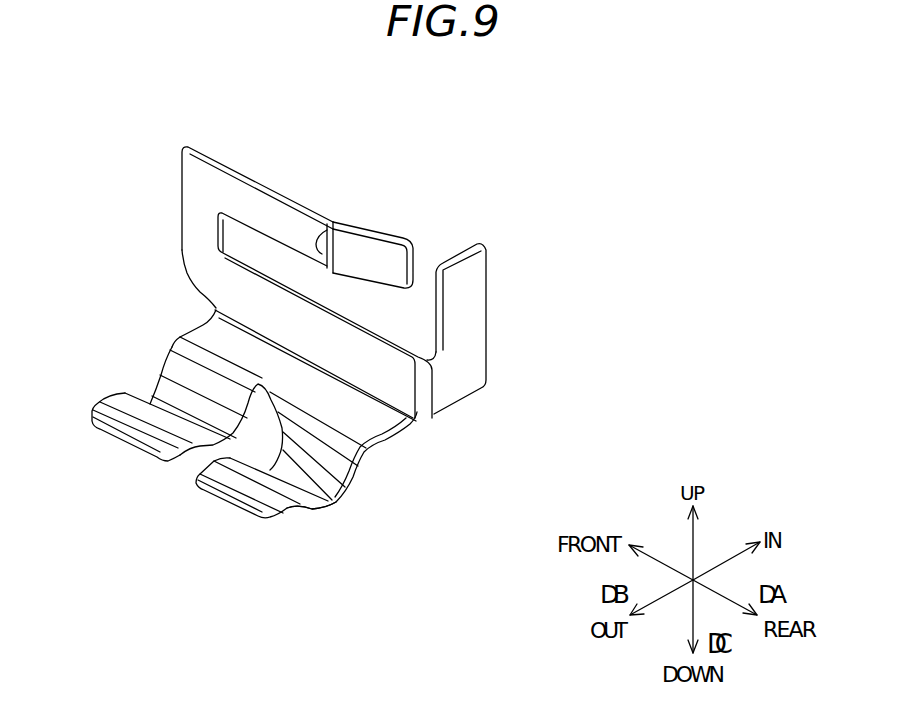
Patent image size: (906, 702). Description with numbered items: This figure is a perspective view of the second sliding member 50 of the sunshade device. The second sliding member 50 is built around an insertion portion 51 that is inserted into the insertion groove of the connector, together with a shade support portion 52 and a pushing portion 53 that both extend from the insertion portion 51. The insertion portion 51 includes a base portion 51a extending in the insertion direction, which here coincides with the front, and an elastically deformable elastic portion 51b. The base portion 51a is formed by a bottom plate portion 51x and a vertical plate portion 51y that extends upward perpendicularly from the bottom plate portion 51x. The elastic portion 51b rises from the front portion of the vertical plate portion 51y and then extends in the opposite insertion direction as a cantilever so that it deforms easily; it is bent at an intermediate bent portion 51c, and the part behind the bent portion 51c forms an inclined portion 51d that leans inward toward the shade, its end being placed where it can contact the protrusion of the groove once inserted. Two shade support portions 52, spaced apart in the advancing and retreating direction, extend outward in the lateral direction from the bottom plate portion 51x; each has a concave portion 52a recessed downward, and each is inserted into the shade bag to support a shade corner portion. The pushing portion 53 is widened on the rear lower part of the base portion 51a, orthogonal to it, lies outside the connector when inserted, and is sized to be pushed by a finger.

The second sliding member 50 is at (491, 112).
The insertion portion 51 is at (167, 197).
The base portion 51a is at (78, 266).
The bottom plate portion 51x is at (202, 327).
The vertical plate portion 51y is at (208, 280).
The elastic portion 51b is at (259, 205).
The bent portion 51c is at (320, 235).
The inclined portion 51d is at (378, 252).
The shade support portion 52 is at (130, 428).
The concave portion 52a is at (333, 506).
The pushing portion 53 is at (476, 341).